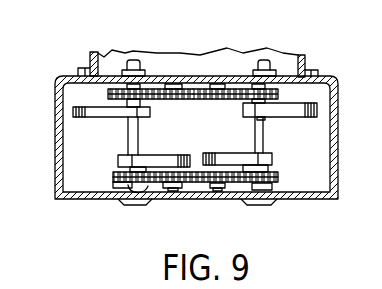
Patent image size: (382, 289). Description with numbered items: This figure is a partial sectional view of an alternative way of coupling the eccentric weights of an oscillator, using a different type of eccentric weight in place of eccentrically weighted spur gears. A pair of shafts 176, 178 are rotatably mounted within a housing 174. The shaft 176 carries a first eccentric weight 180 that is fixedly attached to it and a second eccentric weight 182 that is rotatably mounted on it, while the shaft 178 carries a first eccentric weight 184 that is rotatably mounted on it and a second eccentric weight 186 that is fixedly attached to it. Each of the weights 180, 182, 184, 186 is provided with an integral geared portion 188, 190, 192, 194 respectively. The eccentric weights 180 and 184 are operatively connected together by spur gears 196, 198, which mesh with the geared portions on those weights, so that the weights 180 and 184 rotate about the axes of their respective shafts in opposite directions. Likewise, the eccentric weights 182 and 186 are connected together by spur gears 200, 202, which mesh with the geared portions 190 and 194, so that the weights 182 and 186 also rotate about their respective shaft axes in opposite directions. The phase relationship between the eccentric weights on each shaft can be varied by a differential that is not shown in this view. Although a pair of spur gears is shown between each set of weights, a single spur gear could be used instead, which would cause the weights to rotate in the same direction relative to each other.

The housing 174 is at (288, 77).
The shaft 176 is at (148, 186).
The shaft 178 is at (266, 186).
The first eccentric weight 180 is at (72, 122).
The second eccentric weight 182 is at (116, 158).
The first eccentric weight 184 is at (338, 105).
The second eccentric weight 186 is at (272, 160).
The geared portion 188 is at (109, 97).
The geared portion 190 is at (120, 183).
The geared portion 192 is at (278, 94).
The geared portion 194 is at (278, 174).
The spur gear 196 is at (174, 100).
The spur gear 198 is at (226, 100).
The spur gear 200 is at (161, 184).
The spur gear 202 is at (205, 183).